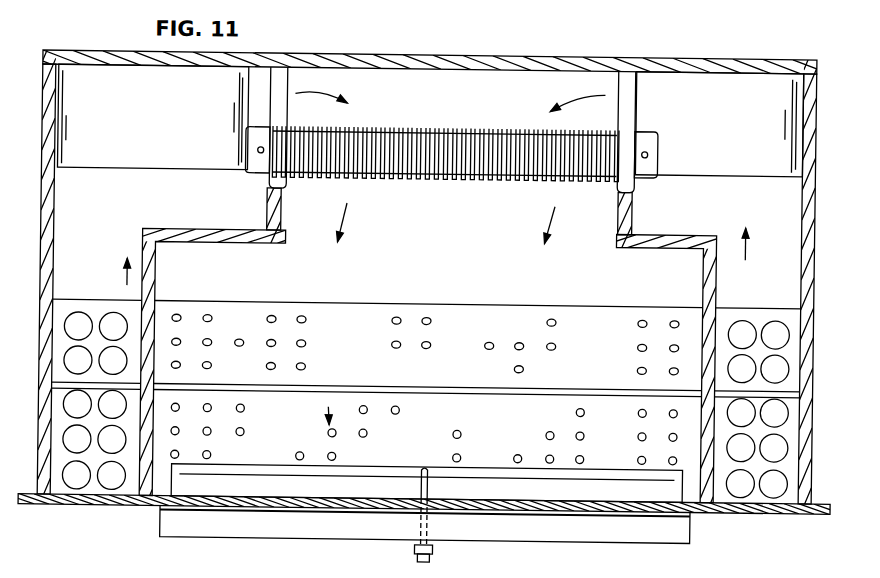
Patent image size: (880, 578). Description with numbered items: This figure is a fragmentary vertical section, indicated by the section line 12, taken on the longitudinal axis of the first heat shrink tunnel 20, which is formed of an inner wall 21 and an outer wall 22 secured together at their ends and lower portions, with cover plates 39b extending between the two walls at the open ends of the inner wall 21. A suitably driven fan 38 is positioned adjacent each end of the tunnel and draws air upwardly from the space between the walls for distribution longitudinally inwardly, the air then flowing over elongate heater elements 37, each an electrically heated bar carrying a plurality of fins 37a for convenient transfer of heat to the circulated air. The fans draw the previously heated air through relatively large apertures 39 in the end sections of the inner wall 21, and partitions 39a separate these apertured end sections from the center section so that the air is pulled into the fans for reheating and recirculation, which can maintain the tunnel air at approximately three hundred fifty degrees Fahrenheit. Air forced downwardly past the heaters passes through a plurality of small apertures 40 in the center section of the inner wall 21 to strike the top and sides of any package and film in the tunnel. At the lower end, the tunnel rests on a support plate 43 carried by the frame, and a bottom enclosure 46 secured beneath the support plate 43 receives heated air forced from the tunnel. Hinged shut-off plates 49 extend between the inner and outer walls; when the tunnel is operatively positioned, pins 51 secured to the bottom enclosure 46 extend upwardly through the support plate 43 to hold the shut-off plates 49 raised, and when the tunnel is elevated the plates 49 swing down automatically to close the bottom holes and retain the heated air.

The section line 12 is at (429, 101).
The first heat shrink tunnel 20 is at (357, 48).
The outer wall 22 is at (435, 50).
The fan 38 is at (153, 140).
The heater element 37 is at (520, 173).
The fin 37a is at (414, 176).
The cover plate 39b is at (57, 235).
The partition 39a is at (158, 275).
The aperture 39 is at (117, 311).
The inner wall 21 is at (428, 339).
The aperture 40 is at (342, 339).
The shut-off plate 49 is at (604, 471).
The pin 51 is at (438, 478).
The support plate 43 is at (107, 511).
The bottom enclosure 46 is at (509, 533).